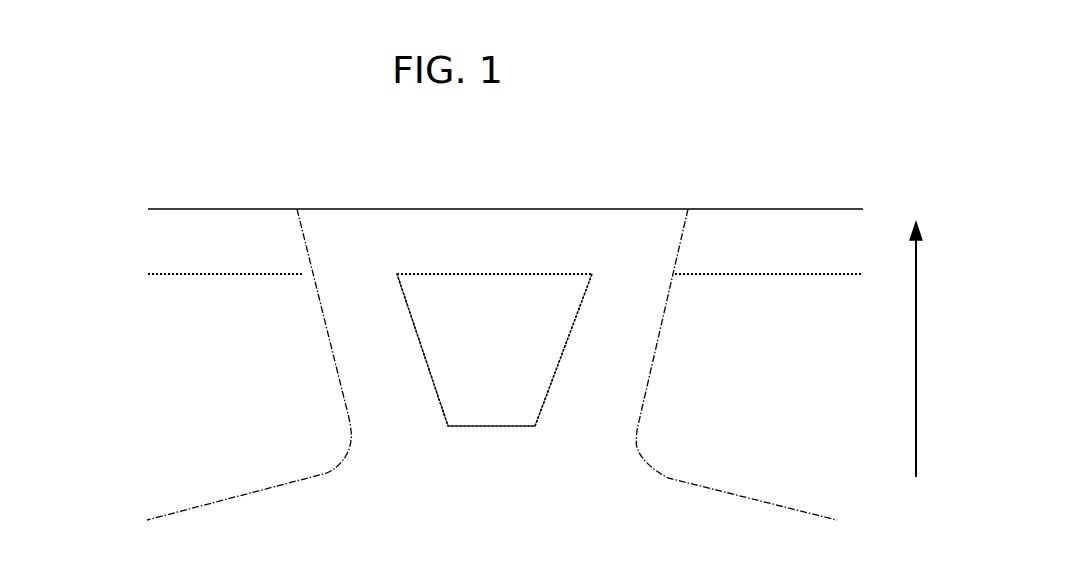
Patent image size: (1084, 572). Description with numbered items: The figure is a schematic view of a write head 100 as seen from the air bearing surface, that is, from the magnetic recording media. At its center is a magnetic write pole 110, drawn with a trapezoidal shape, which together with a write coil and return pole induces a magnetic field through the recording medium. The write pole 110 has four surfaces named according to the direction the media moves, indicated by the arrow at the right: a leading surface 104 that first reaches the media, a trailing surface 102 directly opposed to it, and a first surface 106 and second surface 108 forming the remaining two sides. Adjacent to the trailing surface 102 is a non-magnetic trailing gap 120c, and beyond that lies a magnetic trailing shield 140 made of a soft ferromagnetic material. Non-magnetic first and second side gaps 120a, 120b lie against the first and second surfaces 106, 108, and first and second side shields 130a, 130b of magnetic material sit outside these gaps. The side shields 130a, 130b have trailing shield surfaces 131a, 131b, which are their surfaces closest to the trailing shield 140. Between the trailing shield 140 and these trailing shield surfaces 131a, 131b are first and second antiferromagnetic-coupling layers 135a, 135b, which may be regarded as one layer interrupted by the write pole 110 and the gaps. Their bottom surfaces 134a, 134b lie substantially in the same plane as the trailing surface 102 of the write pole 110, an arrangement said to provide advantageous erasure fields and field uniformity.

The write head 100 is at (345, 166).
The trailing surface 102 is at (450, 266).
The leading surface 104 is at (499, 436).
The first surface 106 is at (420, 385).
The second surface 108 is at (560, 386).
The magnetic write pole 110 is at (513, 344).
The first side gap 120a is at (401, 340).
The second side gap 120b is at (640, 334).
The trailing gap 120c is at (437, 253).
The first side shield 130a is at (265, 403).
The second side shield 130b is at (805, 403).
The trailing shield surface 131a is at (245, 283).
The trailing shield surface 131b is at (752, 283).
The bottom surface 134a is at (172, 266).
The bottom surface 134b is at (838, 266).
The first antiferromagnetic-coupling layer 135a is at (250, 255).
The second antiferromagnetic-coupling layer 135b is at (794, 254).
The trailing shield 140 is at (512, 179).